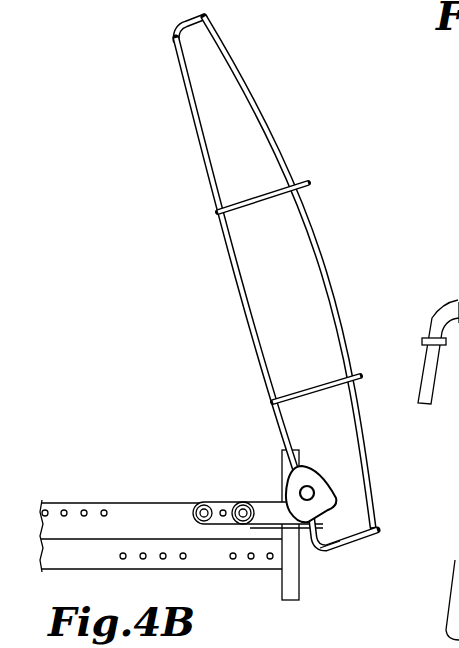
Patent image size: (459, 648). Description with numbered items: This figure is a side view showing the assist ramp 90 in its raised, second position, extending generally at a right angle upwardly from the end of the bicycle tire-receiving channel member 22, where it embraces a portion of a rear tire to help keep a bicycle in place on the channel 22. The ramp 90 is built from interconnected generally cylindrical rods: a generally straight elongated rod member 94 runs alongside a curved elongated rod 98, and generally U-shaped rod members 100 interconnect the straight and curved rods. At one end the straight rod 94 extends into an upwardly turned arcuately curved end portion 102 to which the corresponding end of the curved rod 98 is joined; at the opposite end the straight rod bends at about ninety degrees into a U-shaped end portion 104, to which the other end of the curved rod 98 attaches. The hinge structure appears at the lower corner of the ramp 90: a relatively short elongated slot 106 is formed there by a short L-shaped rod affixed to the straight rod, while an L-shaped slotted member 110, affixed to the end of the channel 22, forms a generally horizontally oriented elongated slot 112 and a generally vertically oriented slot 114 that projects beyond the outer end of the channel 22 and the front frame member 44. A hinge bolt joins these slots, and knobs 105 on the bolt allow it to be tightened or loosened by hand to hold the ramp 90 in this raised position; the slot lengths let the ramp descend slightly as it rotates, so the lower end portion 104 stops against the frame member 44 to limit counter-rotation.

The bicycle tire-receiving channel member 22 is at (87, 496).
The front frame member 44 is at (296, 588).
The assist ramp 90 is at (258, 291).
The straight elongated rod member 94 is at (192, 118).
The curved elongated rod 98 is at (271, 115).
The U-shaped rod members 100 is at (238, 203).
The upwardly turned arcuately curved end portion 102 is at (172, 30).
The U-shaped end portion 104 is at (353, 541).
The knobs 105 is at (322, 489).
The elongated slot 106 is at (332, 528).
The L-shaped slotted member 110 is at (251, 538).
The horizontally oriented elongated slot 112 is at (264, 525).
The vertically oriented slot 114 is at (361, 470).